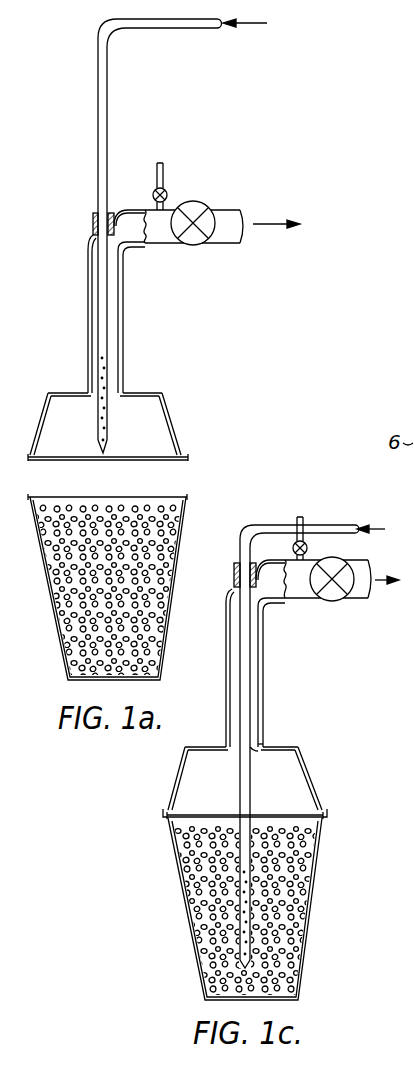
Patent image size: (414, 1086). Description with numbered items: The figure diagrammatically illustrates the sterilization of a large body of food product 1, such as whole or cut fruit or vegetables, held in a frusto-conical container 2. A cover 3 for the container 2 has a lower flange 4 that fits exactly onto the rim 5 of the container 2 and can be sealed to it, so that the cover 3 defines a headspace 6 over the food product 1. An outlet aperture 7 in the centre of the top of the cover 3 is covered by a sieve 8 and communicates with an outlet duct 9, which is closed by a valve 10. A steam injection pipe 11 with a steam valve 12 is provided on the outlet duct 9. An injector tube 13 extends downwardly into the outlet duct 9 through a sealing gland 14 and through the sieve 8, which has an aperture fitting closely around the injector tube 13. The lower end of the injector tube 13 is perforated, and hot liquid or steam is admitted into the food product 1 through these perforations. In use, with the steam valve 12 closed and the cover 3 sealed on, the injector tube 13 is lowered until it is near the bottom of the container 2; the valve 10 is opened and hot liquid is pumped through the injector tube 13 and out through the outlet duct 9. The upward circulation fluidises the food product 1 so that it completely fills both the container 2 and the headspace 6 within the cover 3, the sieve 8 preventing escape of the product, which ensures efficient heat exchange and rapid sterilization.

In FIG. 1A, the food product 1 is at (50, 548).
In FIG. 1C, the food product 1 is at (292, 892).
In FIG. 1A, the container 2 is at (55, 604).
In FIG. 1C, the container 2 is at (304, 922).
In FIG. 1A, the cover 3 is at (170, 422).
In FIG. 1C, the cover 3 is at (316, 792).
In FIG. 1A, the lower flange 4 is at (190, 458).
In FIG. 1C, the lower flange 4 is at (326, 812).
In FIG. 1A, the rim 5 is at (190, 495).
In FIG. 1C, the rim 5 is at (326, 820).
In FIG. 1A, the headspace 6 is at (57, 425).
In FIG. 1C, the headspace 6 is at (190, 775).
In FIG. 1C, the outlet aperture 7 is at (266, 745).
In FIG. 1C, the sieve 8 is at (255, 752).
In FIG. 1A, the outlet duct 9 is at (125, 353).
In FIG. 1C, the outlet duct 9 is at (264, 665).
In FIG. 1A, the valve 10 is at (193, 238).
In FIG. 1C, the valve 10 is at (331, 592).
In FIG. 1A, the steam injection pipe 11 is at (165, 175).
In FIG. 1C, the steam injection pipe 11 is at (301, 516).
In FIG. 1A, the steam valve 12 is at (167, 193).
In FIG. 1C, the steam valve 12 is at (306, 548).
In FIG. 1A, the injector tube 13 is at (107, 128).
In FIG. 1C, the injector tube 13 is at (287, 523).
In FIG. 1A, the sealing gland 14 is at (93, 219).
In FIG. 1C, the sealing gland 14 is at (251, 565).